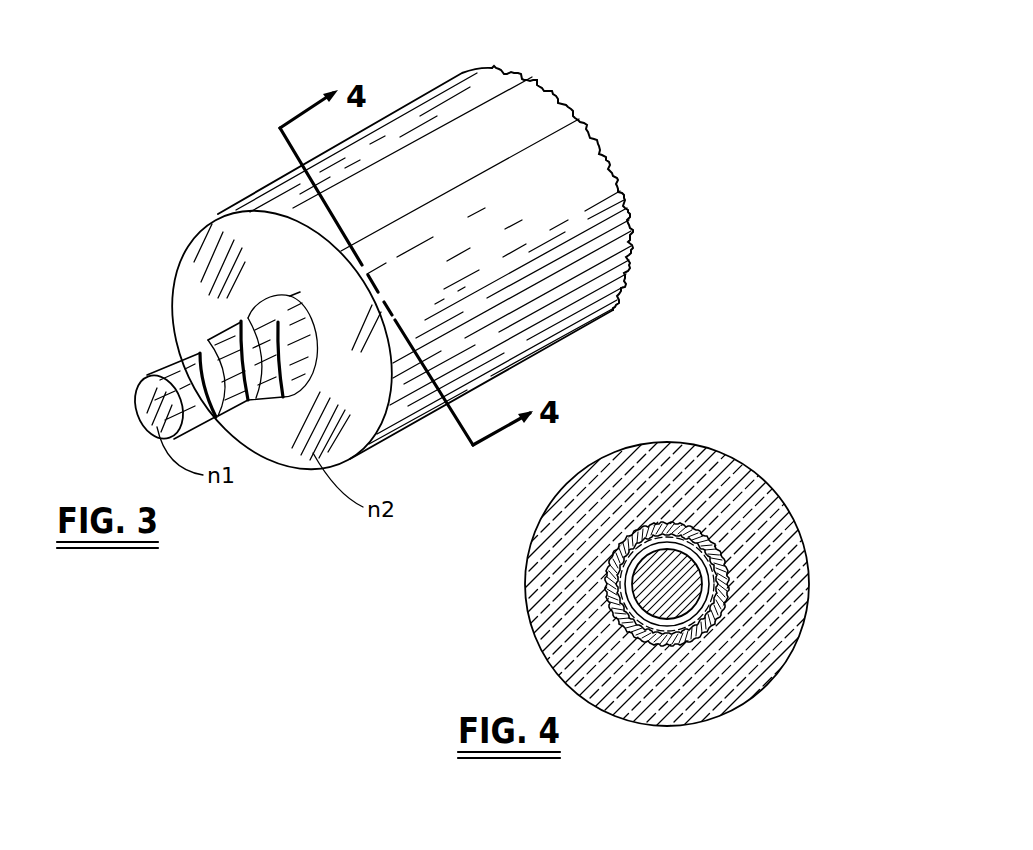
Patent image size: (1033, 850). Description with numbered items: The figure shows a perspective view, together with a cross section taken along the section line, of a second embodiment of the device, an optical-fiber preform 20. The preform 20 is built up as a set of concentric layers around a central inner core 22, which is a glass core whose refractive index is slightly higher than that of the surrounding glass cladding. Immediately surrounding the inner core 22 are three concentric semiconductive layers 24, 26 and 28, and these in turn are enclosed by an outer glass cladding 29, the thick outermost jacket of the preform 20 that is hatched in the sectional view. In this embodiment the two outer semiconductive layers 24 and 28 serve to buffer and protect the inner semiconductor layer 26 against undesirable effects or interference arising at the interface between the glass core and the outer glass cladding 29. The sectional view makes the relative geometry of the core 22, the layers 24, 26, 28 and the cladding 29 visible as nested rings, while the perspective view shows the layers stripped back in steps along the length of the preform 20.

In FIG. 3, the preform 20 is at (118, 218).
In FIG. 3, the inner core 22 is at (155, 372).
In FIG. 4, the inner core 22 is at (695, 611).
In FIG. 3, the semiconductive layer 24 is at (187, 355).
In FIG. 4, the semiconductive layer 24 is at (715, 553).
In FIG. 3, the inner semiconductor layer 26 is at (220, 335).
In FIG. 4, the inner semiconductor layer 26 is at (710, 549).
In FIG. 3, the semiconductive layer 28 is at (243, 305).
In FIG. 4, the semiconductive layer 28 is at (723, 522).
In FIG. 3, the outer jacket 29 is at (418, 98).
In FIG. 4, the outer jacket 29 is at (665, 443).